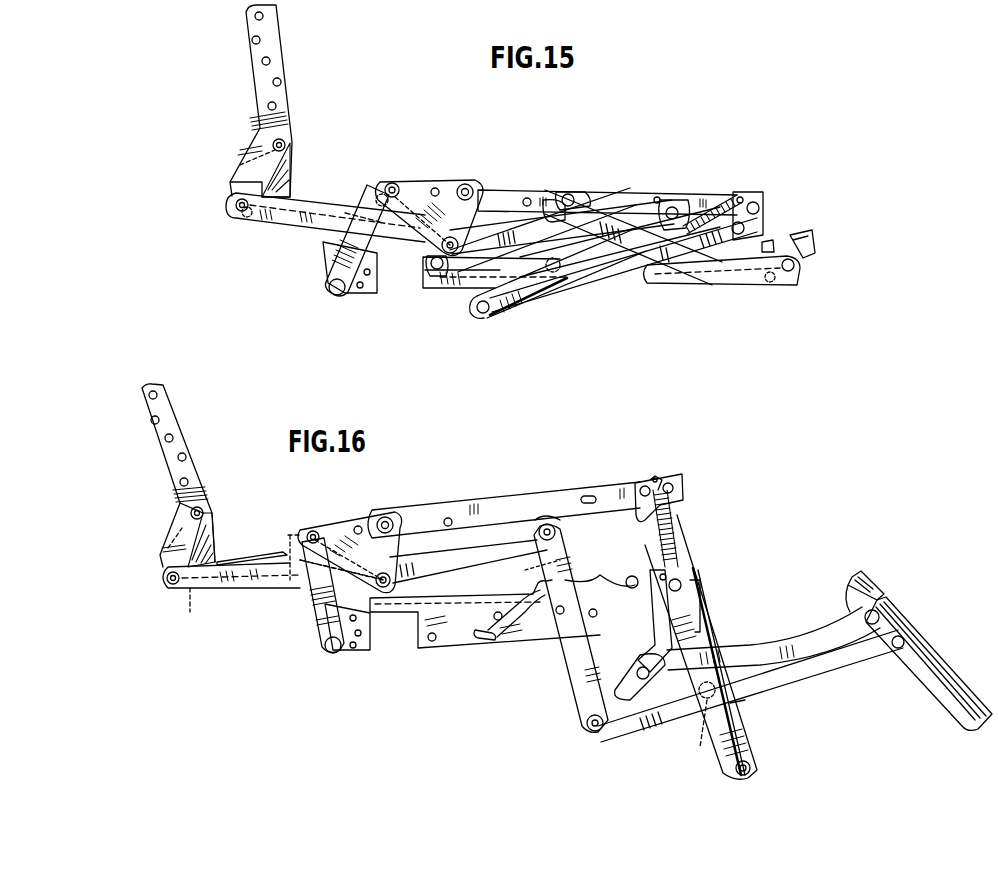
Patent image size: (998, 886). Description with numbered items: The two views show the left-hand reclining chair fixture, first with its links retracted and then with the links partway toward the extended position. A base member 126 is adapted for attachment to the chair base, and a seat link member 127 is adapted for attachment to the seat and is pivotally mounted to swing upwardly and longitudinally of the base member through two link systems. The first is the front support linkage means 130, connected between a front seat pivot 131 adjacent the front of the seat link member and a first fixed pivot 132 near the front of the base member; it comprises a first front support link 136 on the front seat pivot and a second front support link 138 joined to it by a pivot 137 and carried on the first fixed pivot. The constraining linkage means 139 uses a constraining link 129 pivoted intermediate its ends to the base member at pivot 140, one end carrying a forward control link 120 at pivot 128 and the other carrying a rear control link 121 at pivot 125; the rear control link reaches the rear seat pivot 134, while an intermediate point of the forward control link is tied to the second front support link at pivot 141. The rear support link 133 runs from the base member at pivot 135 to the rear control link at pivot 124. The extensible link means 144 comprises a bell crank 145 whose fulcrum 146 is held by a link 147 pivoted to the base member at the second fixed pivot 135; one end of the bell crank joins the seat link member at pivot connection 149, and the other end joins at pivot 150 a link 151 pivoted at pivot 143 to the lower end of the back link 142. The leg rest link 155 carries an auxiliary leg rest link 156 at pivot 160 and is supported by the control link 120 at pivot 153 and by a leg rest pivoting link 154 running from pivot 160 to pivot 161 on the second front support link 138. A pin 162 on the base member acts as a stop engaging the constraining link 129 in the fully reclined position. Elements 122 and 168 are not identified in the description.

In FIG. 15, the forward control link 120 is at (528, 300).
In FIG. 16, the forward control link 120 is at (662, 716).
In FIG. 15, the rear control link 121 is at (502, 223).
In FIG. 16, the rear control link 121 is at (461, 558).
In FIG. 15, the pivot pin 122 is at (285, 148).
In FIG. 16, the pivot pin 122 is at (204, 514).
In FIG. 15, the pivot 124 is at (380, 190).
In FIG. 15, the pivot 125 is at (658, 208).
In FIG. 16, the pivot 125 is at (556, 533).
In FIG. 15, the base member 126 is at (460, 285).
In FIG. 16, the base member 126 is at (458, 636).
In FIG. 15, the seat link member 127 is at (291, 185).
In FIG. 16, the seat link member 127 is at (212, 545).
In FIG. 15, the pivot 128 is at (430, 275).
In FIG. 16, the pivot 128 is at (598, 732).
In FIG. 15, the constraining link 129 is at (538, 273).
In FIG. 16, the constraining link 129 is at (572, 660).
In FIG. 16, the front support linkage means 130 is at (746, 713).
In FIG. 15, the front seat pivot 131 is at (764, 220).
In FIG. 16, the front seat pivot 131 is at (676, 508).
In FIG. 15, the first fixed pivot 132 is at (688, 222).
In FIG. 16, the first fixed pivot 132 is at (672, 575).
In FIG. 15, the rear support link 133 is at (345, 232).
In FIG. 16, the rear support link 133 is at (312, 600).
In FIG. 15, the rear seat pivot 134 is at (247, 220).
In FIG. 16, the rear seat pivot 134 is at (186, 611).
In FIG. 15, the second fixed pivot 135 is at (338, 296).
In FIG. 16, the second fixed pivot 135 is at (334, 654).
In FIG. 15, the first front support link 136 is at (597, 280).
In FIG. 16, the first front support link 136 is at (681, 583).
In FIG. 15, the pivot 137 is at (480, 314).
In FIG. 16, the pivot 137 is at (750, 770).
In FIG. 15, the second front support link 138 is at (552, 212).
In FIG. 16, the second front support link 138 is at (660, 625).
In FIG. 16, the constraining linkage means 139 is at (511, 566).
In FIG. 16, the pivot 140 is at (568, 578).
In FIG. 15, the pivot 141 is at (558, 272).
In FIG. 16, the pivot 141 is at (700, 728).
In FIG. 15, the back link 142 is at (258, 128).
In FIG. 16, the back link 142 is at (175, 515).
In FIG. 15, the pivot 143 is at (234, 216).
In FIG. 16, the pivot 143 is at (166, 588).
In FIG. 16, the extensible link means 144 is at (279, 534).
In FIG. 15, the bell crank 145 is at (430, 186).
In FIG. 16, the bell crank 145 is at (330, 525).
In FIG. 15, the fulcrum 146 is at (394, 183).
In FIG. 16, the fulcrum 146 is at (312, 529).
In FIG. 15, the link 147 is at (362, 258).
In FIG. 16, the link 147 is at (316, 626).
In FIG. 15, the pivot connection 149 is at (466, 183).
In FIG. 16, the pivot connection 149 is at (385, 516).
In FIG. 15, the pivot 150 is at (448, 255).
In FIG. 16, the pivot 150 is at (386, 592).
In FIG. 15, the link 151 is at (350, 214).
In FIG. 16, the link 151 is at (305, 578).
In FIG. 15, the pivot 153 is at (770, 284).
In FIG. 16, the pivot 153 is at (898, 650).
In FIG. 15, the leg rest pivoting link 154 is at (640, 226).
In FIG. 16, the leg rest pivoting link 154 is at (750, 656).
In FIG. 15, the leg rest link 155 is at (712, 284).
In FIG. 16, the leg rest link 155 is at (922, 650).
In FIG. 15, the auxiliary leg rest link 156 is at (815, 248).
In FIG. 16, the auxiliary leg rest link 156 is at (860, 575).
In FIG. 16, the pivot 160 is at (880, 612).
In FIG. 15, the pivot 161 is at (572, 195).
In FIG. 16, the pivot 161 is at (637, 672).
In FIG. 16, the pin 162 is at (632, 575).
In FIG. 15, the pivot pin 168 is at (794, 272).